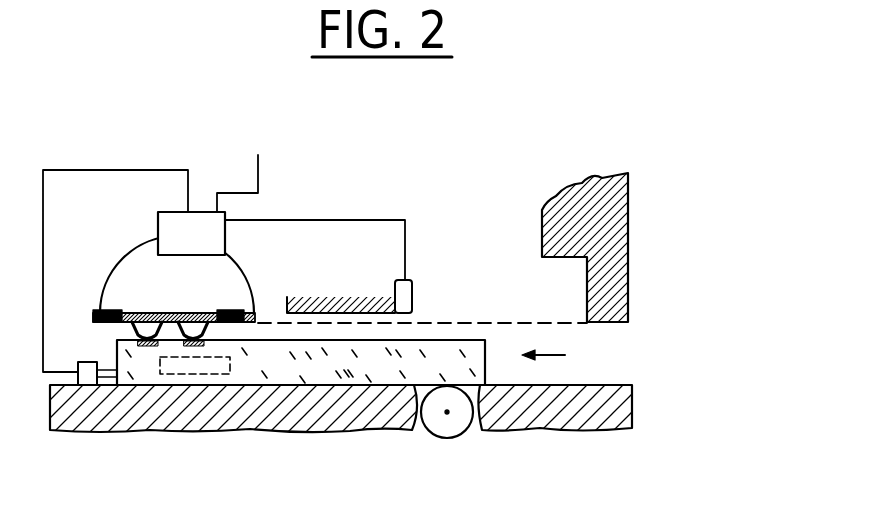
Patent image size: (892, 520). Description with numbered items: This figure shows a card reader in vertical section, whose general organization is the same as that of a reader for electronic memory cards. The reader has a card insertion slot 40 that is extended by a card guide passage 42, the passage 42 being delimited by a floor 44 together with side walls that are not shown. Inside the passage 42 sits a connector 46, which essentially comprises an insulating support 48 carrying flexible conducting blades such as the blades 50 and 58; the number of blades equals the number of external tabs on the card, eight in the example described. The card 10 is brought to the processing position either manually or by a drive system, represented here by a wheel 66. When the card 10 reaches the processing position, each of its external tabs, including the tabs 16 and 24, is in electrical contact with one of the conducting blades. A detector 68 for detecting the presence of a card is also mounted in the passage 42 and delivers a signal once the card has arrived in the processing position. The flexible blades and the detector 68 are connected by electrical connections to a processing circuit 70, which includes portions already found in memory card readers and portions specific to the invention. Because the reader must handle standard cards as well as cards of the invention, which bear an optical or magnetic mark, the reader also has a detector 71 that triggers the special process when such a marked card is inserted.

The card 10 is at (280, 355).
The external tab 16 is at (150, 346).
The external tab 24 is at (192, 372).
The card insertion slot 40 is at (612, 350).
The card guide passage 42 is at (497, 343).
The floor 44 is at (338, 382).
The connector 46 is at (202, 307).
The insulating support 48 is at (177, 310).
The flexible conducting blade 50 is at (123, 331).
The flexible conducting blade 58 is at (208, 348).
The wheel 66 is at (447, 425).
The detector 68 is at (84, 386).
The processing circuit 70 is at (205, 240).
The detector 71 is at (408, 295).